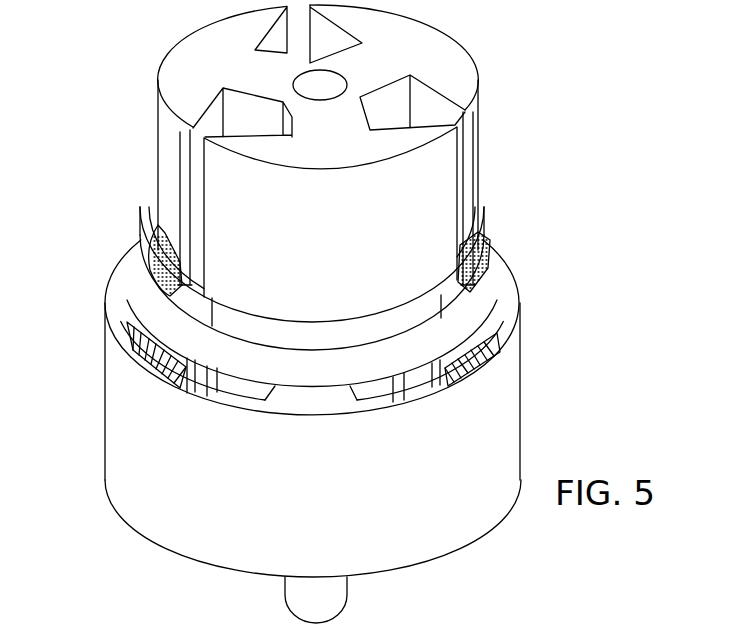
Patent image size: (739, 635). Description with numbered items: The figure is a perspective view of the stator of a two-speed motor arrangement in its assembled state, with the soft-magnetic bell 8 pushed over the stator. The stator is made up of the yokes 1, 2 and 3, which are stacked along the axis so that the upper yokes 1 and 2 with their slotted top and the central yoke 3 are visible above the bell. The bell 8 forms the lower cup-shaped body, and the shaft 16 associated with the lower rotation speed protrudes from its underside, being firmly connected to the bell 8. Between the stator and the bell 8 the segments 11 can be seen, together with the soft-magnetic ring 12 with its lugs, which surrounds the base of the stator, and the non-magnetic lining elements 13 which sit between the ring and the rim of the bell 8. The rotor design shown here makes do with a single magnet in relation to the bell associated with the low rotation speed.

The yoke 1 is at (442, 82).
The yoke 2 is at (185, 43).
The yoke 3 is at (392, 215).
The soft-magnetic bell 8 is at (493, 403).
The segments 11 is at (135, 268).
The soft-magnetic ring 12 is at (480, 309).
The non-magnetic lining elements 13 is at (155, 360).
The shaft 16 is at (355, 593).